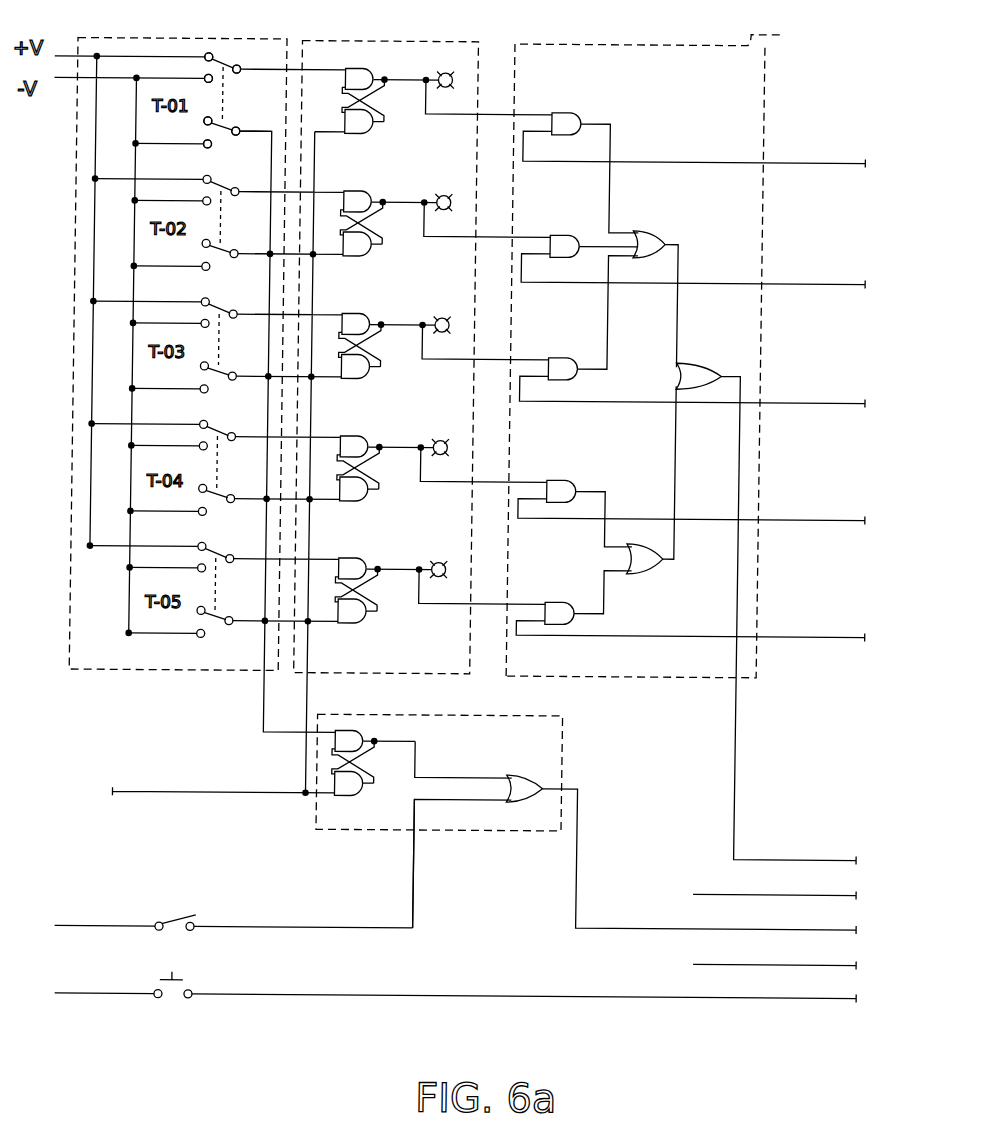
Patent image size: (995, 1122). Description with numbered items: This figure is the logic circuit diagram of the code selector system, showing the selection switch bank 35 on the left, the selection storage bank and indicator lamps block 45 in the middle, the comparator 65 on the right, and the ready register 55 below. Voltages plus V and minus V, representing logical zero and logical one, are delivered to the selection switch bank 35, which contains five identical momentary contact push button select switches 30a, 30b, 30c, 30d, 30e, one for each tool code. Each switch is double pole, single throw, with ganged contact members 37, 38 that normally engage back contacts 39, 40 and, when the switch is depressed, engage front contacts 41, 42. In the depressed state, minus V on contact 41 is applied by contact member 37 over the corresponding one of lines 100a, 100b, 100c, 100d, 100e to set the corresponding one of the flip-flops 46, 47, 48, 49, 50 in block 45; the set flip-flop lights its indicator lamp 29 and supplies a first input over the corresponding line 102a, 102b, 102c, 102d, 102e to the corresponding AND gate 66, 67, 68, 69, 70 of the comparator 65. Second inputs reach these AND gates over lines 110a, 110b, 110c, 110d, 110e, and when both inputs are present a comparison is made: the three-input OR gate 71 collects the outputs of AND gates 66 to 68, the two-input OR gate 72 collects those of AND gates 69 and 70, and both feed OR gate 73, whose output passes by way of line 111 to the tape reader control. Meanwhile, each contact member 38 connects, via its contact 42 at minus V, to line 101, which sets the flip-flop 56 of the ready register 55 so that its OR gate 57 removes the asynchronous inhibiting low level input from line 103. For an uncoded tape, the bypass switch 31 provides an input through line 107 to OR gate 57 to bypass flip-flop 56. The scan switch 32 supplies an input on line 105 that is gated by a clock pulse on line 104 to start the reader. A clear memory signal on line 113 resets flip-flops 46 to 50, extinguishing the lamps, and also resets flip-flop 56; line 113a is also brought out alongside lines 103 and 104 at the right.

The selection switch bank 35 is at (93, 39).
The code select switch 30a is at (219, 95).
The code select switch 30b is at (219, 214).
The code select switch 30c is at (219, 333).
The code select switch 30d is at (219, 468).
The code select switch 30e is at (219, 591).
The contact member 37 is at (227, 69).
The contact member 38 is at (218, 133).
The back contact 39 is at (205, 54).
The back contact 40 is at (200, 123).
The front contact 41 is at (200, 78).
The front contact 42 is at (201, 149).
The selection storage bank and indicator lamps block 45 is at (471, 39).
The indicator lamp 29 is at (449, 79).
The line 100a is at (369, 75).
The line 100b is at (388, 205).
The line 100c is at (388, 329).
The line 100d is at (387, 452).
The line 100e is at (386, 579).
The flip-flop 46 is at (365, 69).
The flip-flop 47 is at (366, 192).
The flip-flop 48 is at (367, 315).
The flip-flop 49 is at (369, 438).
The flip-flop 50 is at (360, 559).
The line 102a is at (484, 116).
The line 102b is at (484, 238).
The line 102c is at (484, 360).
The line 102d is at (484, 483).
The line 102e is at (484, 605).
The comparator 65 is at (657, 351).
The AND gate 66 is at (568, 112).
The AND gate 67 is at (564, 233).
The AND gate 68 is at (562, 357).
The AND gate 69 is at (562, 480).
The AND gate 70 is at (566, 580).
The OR gate 71 is at (646, 231).
The OR gate 72 is at (646, 573).
The OR gate 73 is at (706, 363).
The line 110a is at (780, 161).
The line 110b is at (781, 282).
The line 110c is at (783, 401).
The line 110d is at (785, 518).
The line 110e is at (786, 635).
The line 111 is at (781, 858).
The input line 113a is at (781, 893).
The line 103 is at (781, 928).
The line 104 is at (781, 963).
The line 105 is at (783, 984).
The ready register 55 is at (560, 721).
The flip-flop 56 is at (354, 731).
The OR gate 57 is at (526, 776).
The line 101 is at (268, 734).
The line 113 is at (176, 780).
The line 107 is at (420, 896).
The bypass switch 31 is at (203, 917).
The scan switch 32 is at (214, 963).